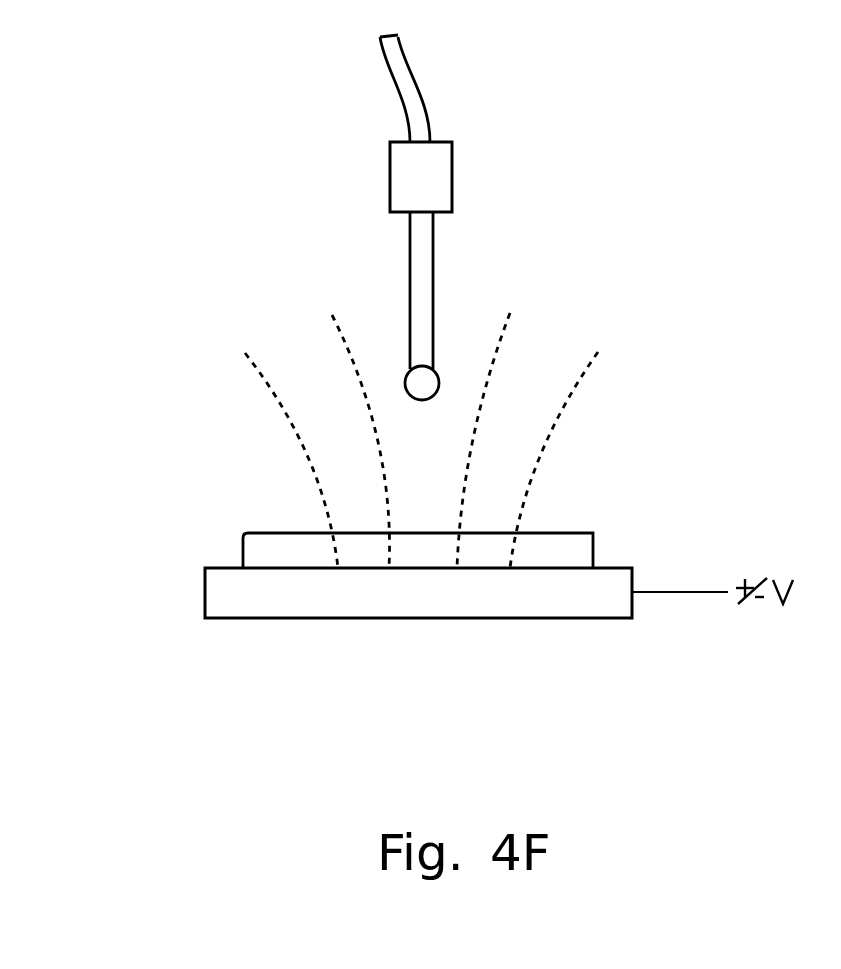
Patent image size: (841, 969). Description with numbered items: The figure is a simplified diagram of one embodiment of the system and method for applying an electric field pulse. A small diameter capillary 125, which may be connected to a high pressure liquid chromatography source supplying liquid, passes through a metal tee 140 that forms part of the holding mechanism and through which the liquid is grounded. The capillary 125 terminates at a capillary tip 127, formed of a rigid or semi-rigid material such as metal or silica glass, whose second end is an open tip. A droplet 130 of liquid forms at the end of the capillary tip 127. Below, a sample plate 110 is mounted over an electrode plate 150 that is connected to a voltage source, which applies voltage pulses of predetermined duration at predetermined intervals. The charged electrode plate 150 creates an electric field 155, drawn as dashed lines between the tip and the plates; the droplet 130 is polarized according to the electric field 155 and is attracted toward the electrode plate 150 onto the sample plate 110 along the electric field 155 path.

The capillary 125 is at (420, 90).
The metal tee 140 is at (452, 177).
The capillary tip 127 is at (433, 272).
The droplet 130 is at (440, 377).
The electric field 155 is at (647, 417).
The sample plate 110 is at (242, 533).
The electrode plate 150 is at (205, 595).